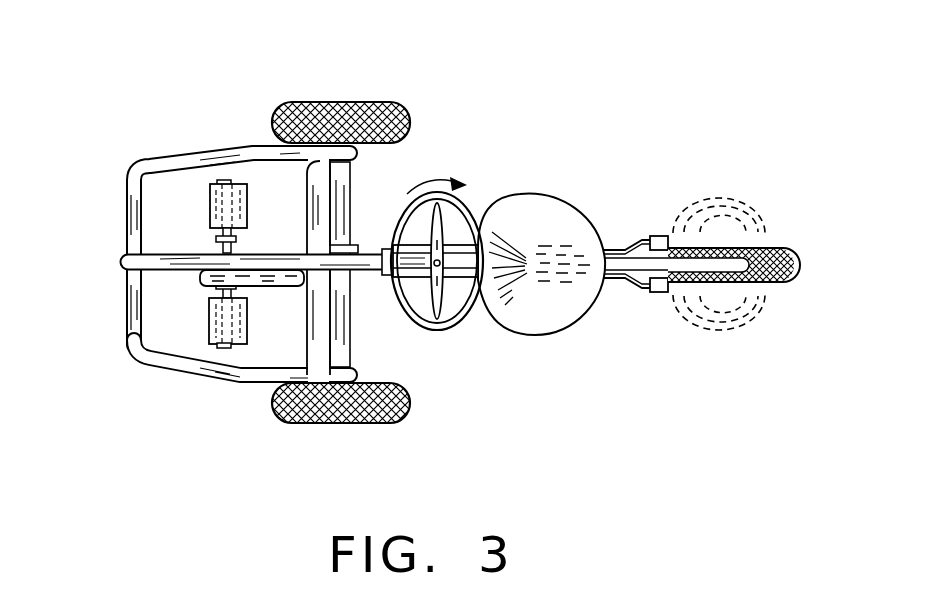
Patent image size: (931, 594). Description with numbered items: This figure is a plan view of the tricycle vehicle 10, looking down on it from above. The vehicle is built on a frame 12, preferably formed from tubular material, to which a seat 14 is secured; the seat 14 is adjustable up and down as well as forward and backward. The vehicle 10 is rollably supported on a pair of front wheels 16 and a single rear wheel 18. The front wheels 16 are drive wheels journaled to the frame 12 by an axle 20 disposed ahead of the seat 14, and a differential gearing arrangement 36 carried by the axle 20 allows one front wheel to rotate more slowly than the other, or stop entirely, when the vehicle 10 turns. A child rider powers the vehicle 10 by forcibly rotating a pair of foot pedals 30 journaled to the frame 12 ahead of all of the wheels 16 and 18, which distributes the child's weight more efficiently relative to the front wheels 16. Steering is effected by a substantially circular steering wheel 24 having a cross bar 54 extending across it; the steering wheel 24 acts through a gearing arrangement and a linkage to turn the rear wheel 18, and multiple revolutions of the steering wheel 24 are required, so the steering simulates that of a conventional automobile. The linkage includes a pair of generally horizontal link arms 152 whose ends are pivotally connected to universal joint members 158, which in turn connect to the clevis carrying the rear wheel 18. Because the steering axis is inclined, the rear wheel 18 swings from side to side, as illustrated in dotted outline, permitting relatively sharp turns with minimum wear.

The tricycle vehicle 10 is at (467, 85).
The frame 12 is at (153, 160).
The seat 14 is at (540, 194).
The front wheels 16 is at (300, 102).
The rear wheel 18 is at (800, 253).
The axle 20 is at (350, 206).
The steering wheel 24 is at (462, 193).
The foot pedals 30 is at (210, 198).
The differential gearing arrangement 36 is at (358, 280).
The cross bar 54 is at (433, 325).
The horizontal link arms 152 is at (603, 250).
The universal joint members 158 is at (674, 236).